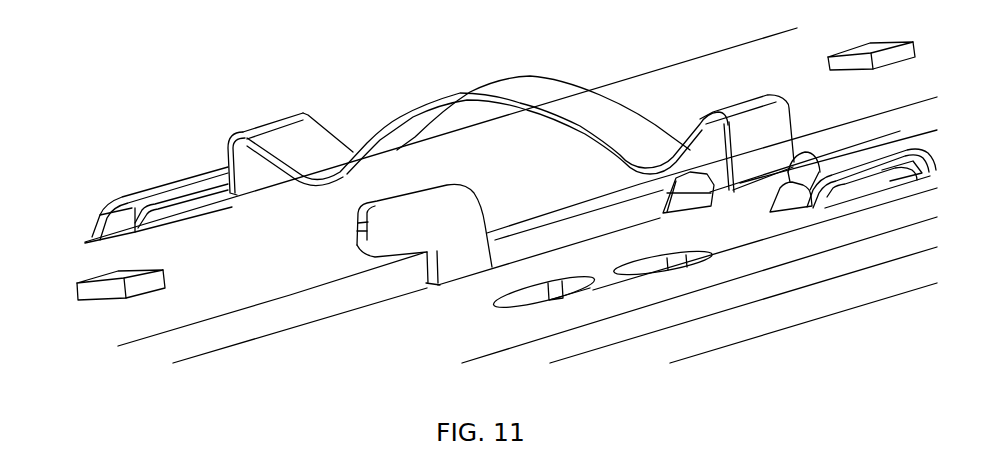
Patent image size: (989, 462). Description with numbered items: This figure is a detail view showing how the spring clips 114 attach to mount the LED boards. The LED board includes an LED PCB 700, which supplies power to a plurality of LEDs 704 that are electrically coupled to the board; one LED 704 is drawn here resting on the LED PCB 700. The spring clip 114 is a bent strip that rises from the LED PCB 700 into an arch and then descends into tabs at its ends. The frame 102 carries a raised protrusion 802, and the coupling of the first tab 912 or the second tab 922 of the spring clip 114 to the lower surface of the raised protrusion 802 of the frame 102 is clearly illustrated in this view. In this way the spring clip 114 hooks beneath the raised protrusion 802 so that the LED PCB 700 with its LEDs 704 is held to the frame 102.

The frame 102 is at (603, 250).
The spring clip 114 is at (548, 90).
The LED PCB 700 is at (469, 131).
The LED 704 is at (123, 277).
The raised protrusion 802 is at (687, 198).
The first tab 912 is at (848, 245).
The second tab 922 is at (733, 195).